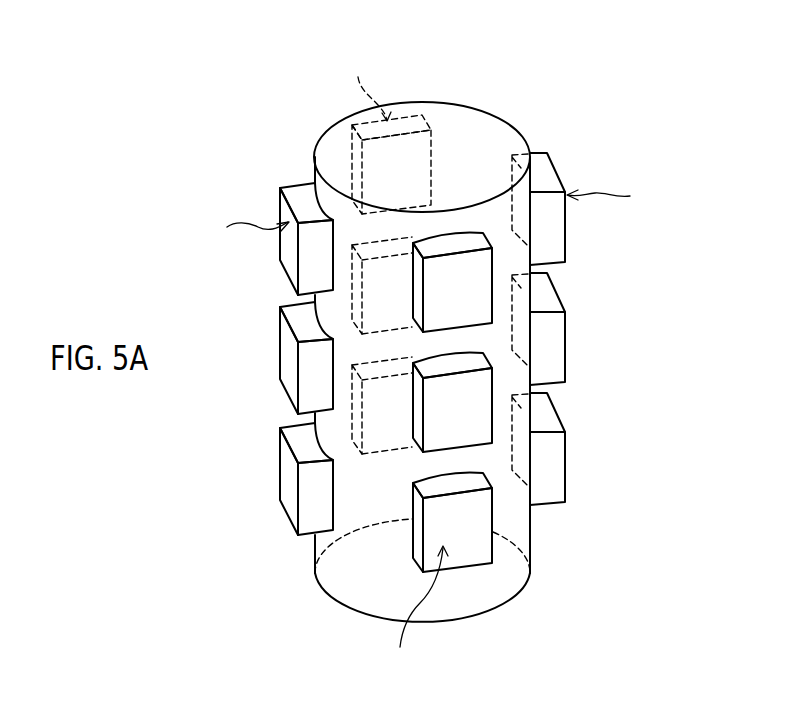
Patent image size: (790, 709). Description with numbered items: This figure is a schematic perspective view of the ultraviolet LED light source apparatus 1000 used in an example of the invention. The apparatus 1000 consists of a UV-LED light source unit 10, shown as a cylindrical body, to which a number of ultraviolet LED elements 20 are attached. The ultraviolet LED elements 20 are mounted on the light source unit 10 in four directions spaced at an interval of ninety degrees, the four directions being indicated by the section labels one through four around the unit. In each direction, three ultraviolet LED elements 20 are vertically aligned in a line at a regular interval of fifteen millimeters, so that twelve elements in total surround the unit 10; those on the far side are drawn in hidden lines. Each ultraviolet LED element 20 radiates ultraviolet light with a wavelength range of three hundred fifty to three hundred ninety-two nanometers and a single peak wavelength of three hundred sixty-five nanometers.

The ultraviolet LED light source apparatus 1000 is at (430, 355).
The UV-LED light source unit 10 is at (531, 530).
The ultraviolet LED element 20 is at (407, 240).